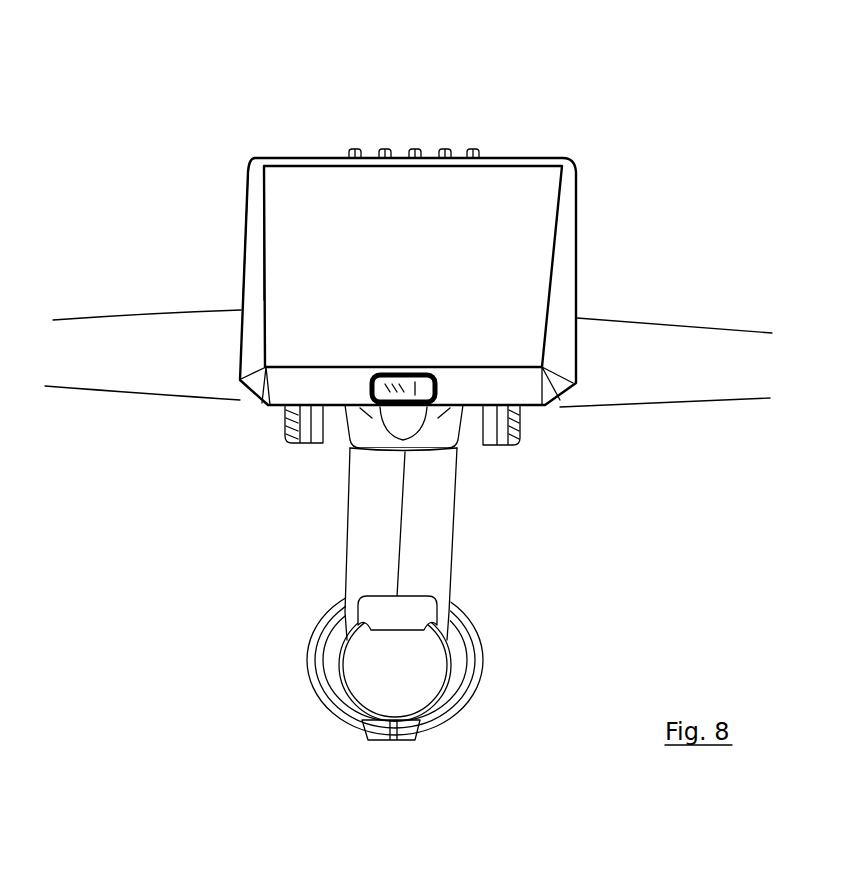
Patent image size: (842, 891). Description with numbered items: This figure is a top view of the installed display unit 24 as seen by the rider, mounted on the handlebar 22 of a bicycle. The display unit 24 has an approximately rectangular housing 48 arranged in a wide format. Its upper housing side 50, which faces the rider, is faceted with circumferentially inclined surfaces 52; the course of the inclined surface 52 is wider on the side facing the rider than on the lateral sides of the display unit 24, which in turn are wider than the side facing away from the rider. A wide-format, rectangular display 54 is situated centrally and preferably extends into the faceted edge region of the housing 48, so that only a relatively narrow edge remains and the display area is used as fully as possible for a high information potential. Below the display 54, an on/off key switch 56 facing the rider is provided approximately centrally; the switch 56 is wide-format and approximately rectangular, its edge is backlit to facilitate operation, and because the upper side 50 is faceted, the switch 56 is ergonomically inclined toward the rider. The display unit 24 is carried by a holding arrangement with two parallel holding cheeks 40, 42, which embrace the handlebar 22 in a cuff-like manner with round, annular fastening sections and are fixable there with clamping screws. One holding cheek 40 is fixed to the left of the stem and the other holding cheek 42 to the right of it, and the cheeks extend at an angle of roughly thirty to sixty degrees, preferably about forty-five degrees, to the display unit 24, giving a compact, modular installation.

The handlebar 22 is at (677, 367).
The display unit 24 is at (455, 150).
The holding cheek 40 is at (300, 437).
The holding cheek 42 is at (502, 437).
The housing 48 is at (573, 260).
The upper housing side 50 is at (252, 255).
The inclined surface 52 is at (252, 293).
The display 54 is at (320, 208).
The on/off key switch 56 is at (378, 407).